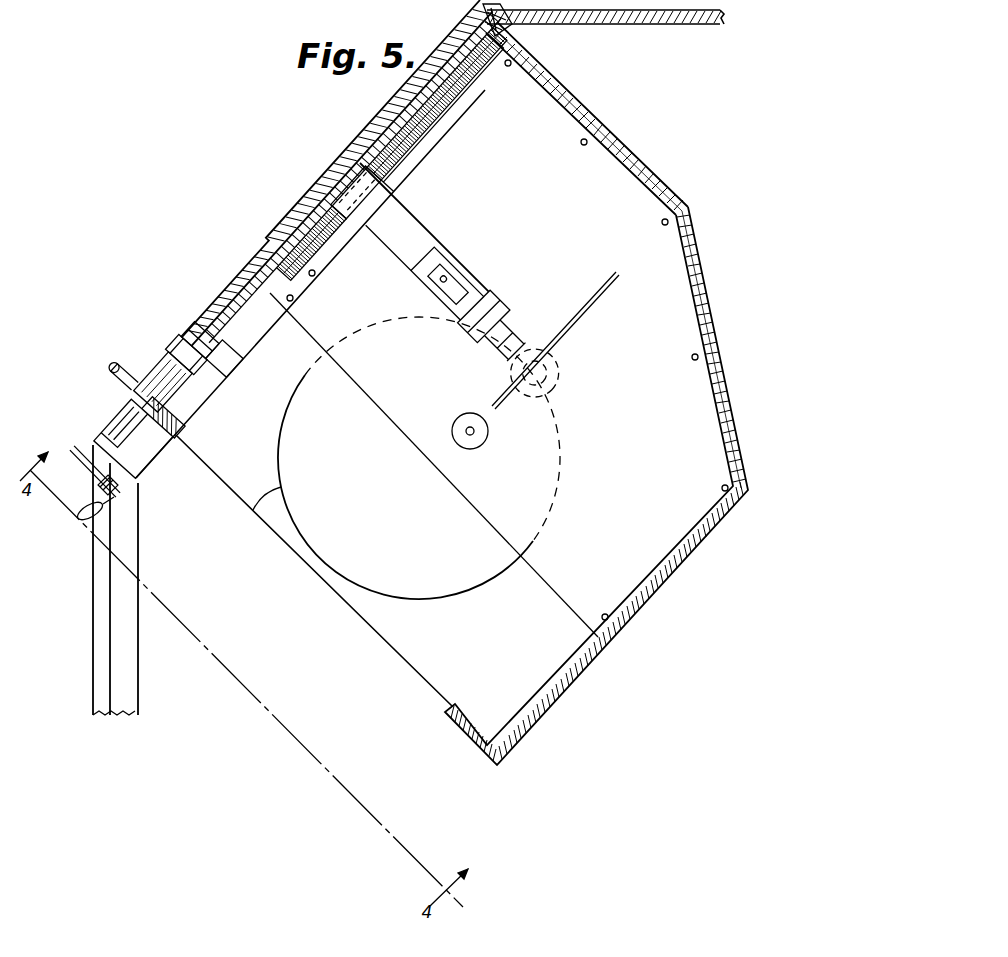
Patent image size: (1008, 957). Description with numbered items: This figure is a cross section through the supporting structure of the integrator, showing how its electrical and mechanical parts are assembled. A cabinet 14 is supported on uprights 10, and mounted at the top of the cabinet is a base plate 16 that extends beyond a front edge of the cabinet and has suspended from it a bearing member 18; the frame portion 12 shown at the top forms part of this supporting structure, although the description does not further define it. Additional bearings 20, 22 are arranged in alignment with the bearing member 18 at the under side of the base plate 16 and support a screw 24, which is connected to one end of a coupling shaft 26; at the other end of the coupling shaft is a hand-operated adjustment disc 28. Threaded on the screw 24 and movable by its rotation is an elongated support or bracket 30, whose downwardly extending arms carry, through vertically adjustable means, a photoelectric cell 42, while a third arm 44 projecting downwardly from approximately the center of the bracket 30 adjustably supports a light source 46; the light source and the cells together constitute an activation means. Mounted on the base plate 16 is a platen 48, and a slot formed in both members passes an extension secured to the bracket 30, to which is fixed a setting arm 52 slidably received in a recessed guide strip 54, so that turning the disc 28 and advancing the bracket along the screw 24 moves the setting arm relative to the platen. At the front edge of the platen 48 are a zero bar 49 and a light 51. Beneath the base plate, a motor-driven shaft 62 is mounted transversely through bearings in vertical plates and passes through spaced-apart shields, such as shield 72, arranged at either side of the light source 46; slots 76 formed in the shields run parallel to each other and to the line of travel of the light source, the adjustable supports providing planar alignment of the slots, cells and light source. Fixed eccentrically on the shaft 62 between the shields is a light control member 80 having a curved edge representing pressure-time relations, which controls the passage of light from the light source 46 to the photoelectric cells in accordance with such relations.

The uprights 10 is at (123, 598).
The frame top wall 12 is at (530, 52).
The cabinet 14 is at (722, 357).
The base plate 16 is at (158, 380).
The bearing member 18 is at (108, 427).
The bearing 20 is at (280, 268).
The bearing 22 is at (495, 55).
The screw 24 is at (423, 135).
The coupling shaft 26 is at (215, 362).
The hand-operated adjustment disc 28 is at (80, 449).
The elongated support or bracket 30 is at (357, 230).
The photoelectric cell 42 is at (533, 340).
The third arm 44 is at (420, 240).
The light source 46 is at (549, 393).
The platen 48 is at (180, 343).
The zero bar 49 is at (137, 383).
The light 51 is at (117, 370).
The setting arm 52 is at (197, 340).
The recessed guide strip 54 is at (347, 152).
The shaft 62 is at (470, 427).
The shield 72 is at (588, 618).
The slots 76 is at (575, 318).
The light control member 80 is at (253, 512).